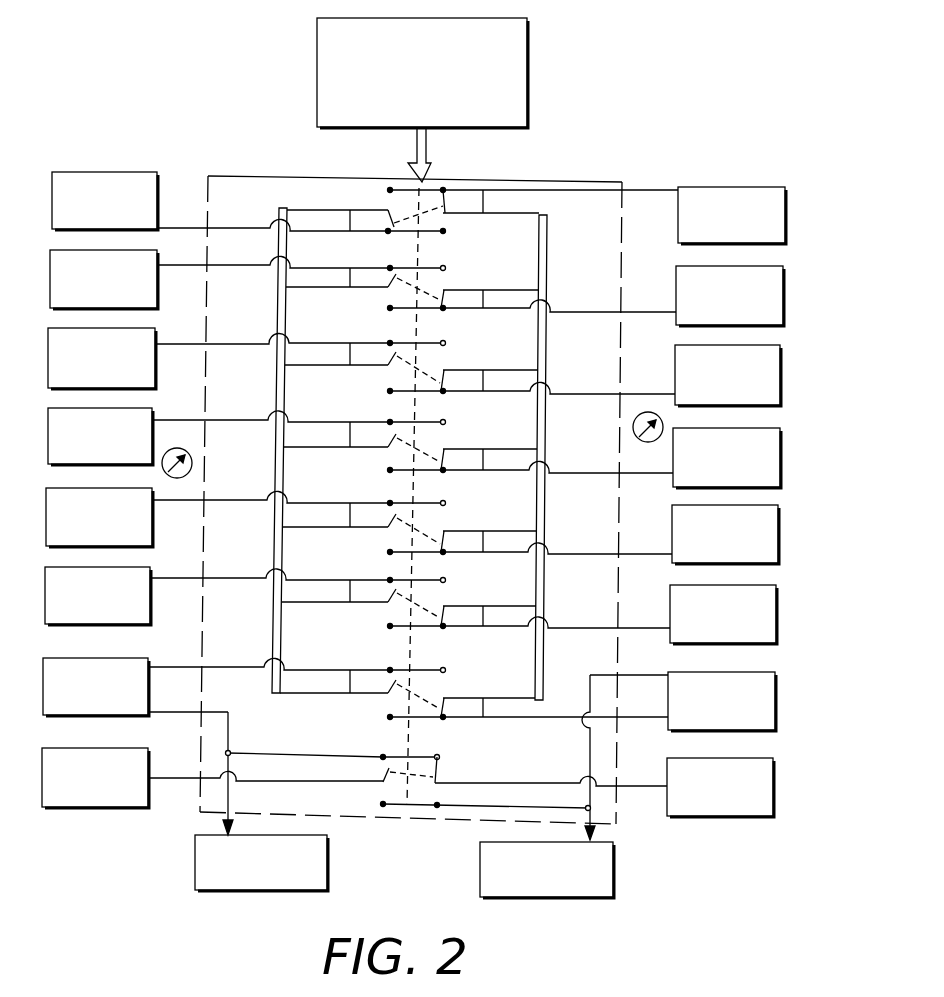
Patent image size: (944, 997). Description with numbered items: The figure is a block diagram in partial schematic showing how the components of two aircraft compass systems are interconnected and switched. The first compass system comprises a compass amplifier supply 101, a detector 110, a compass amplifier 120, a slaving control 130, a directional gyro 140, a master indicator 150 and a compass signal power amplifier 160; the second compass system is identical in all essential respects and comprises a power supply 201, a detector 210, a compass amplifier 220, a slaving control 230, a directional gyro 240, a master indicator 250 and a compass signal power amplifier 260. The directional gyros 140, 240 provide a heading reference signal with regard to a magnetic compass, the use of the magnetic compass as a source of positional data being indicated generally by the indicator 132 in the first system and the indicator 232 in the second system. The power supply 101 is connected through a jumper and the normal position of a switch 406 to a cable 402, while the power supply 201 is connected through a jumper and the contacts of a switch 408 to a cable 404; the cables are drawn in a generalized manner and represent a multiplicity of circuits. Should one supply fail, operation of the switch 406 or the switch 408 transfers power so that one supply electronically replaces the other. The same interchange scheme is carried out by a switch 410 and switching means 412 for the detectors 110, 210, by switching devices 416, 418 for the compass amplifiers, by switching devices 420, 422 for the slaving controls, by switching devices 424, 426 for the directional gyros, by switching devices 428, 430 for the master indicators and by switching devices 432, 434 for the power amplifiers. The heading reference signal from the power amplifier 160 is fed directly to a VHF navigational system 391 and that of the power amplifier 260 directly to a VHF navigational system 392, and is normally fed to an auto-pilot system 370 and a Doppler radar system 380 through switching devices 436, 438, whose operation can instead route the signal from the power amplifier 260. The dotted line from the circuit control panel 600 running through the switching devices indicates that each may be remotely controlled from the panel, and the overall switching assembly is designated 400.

The compass amplifier supply 101 is at (105, 201).
The detector 110 is at (104, 279).
The compass amplifier 120 is at (102, 358).
The slaving control 130 is at (100, 436).
The indicator 132 is at (163, 472).
The directional gyro 140 is at (99, 517).
The master indicator 150 is at (98, 596).
The compass signal power amplifier 160 is at (135, 687).
The power supply 201 is at (732, 215).
The detector 210 is at (730, 296).
The compass amplifier 220 is at (728, 375).
The slaving control 230 is at (727, 458).
The indicator 232 is at (663, 425).
The directional gyro 240 is at (725, 534).
The master indicator 250 is at (723, 614).
The compass signal power amplifier 260 is at (683, 701).
The auto-pilot system 370 is at (95, 778).
The Doppler radar system 380 is at (720, 787).
The VHF navigational system 391 is at (261, 801).
The VHF navigational system 392 is at (547, 786).
The transfer switch assembly 400 is at (582, 180).
The cable 402 is at (287, 246).
The cable 404 is at (538, 236).
The switch 406 is at (389, 207).
The switch 408 is at (446, 209).
The switch 410 is at (386, 290).
The switching means 412 is at (447, 289).
The switching device 416 is at (386, 368).
The switching device 418 is at (447, 369).
The switching device 420 is at (386, 450).
The switching device 422 is at (447, 448).
The switching device 424 is at (386, 530).
The switching device 426 is at (447, 530).
The switching device 428 is at (386, 605).
The switching device 430 is at (447, 605).
The switching device 432 is at (386, 697).
The switching device 434 is at (447, 697).
The switching device 436 is at (382, 786).
The switching device 438 is at (442, 773).
The circuit control panel 600 is at (444, 112).